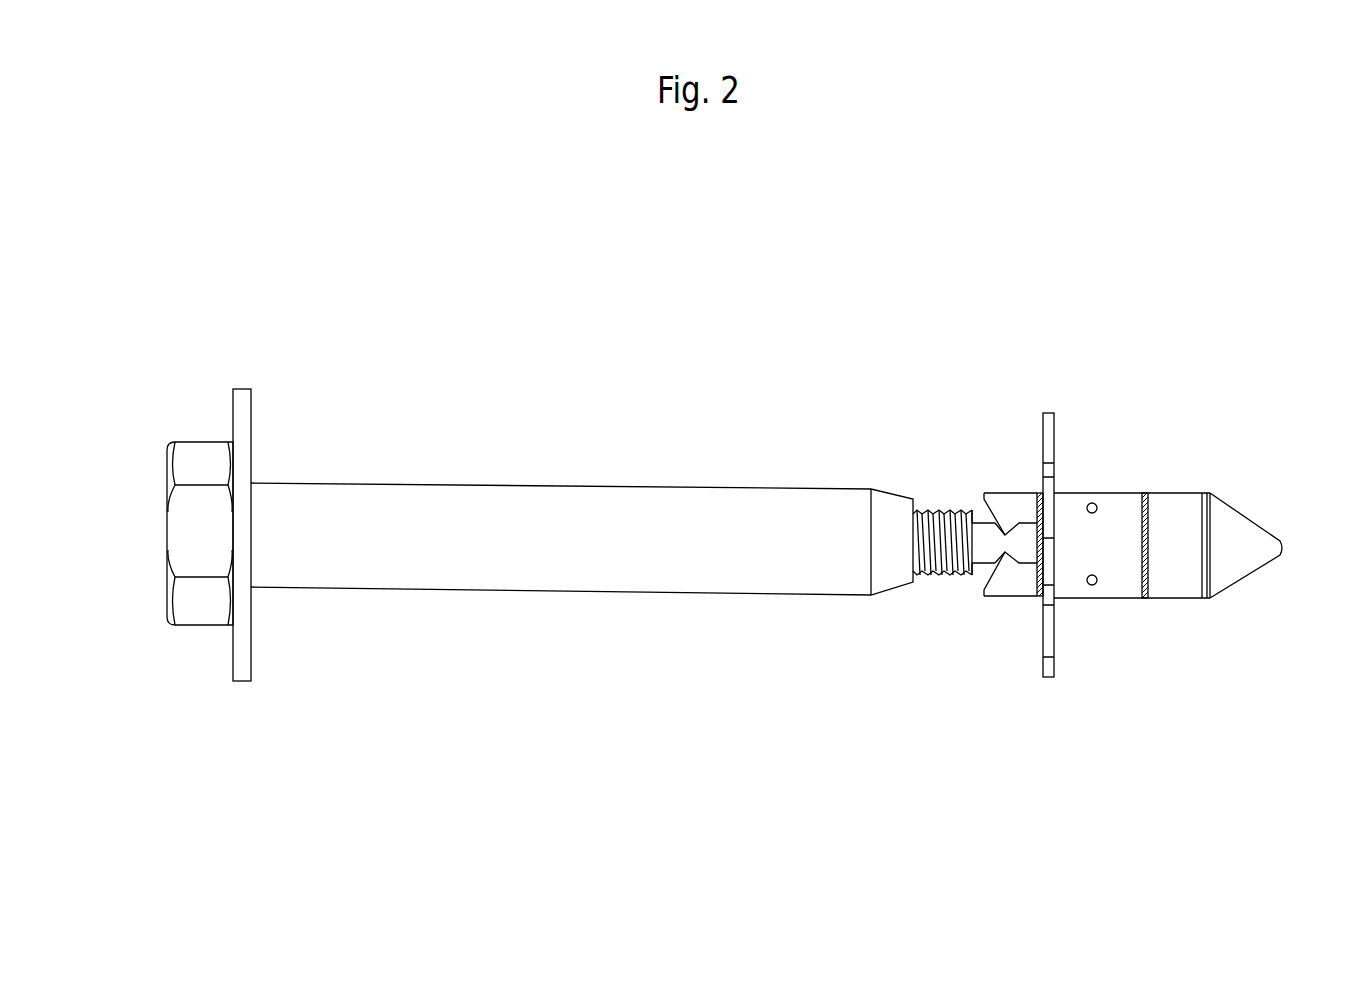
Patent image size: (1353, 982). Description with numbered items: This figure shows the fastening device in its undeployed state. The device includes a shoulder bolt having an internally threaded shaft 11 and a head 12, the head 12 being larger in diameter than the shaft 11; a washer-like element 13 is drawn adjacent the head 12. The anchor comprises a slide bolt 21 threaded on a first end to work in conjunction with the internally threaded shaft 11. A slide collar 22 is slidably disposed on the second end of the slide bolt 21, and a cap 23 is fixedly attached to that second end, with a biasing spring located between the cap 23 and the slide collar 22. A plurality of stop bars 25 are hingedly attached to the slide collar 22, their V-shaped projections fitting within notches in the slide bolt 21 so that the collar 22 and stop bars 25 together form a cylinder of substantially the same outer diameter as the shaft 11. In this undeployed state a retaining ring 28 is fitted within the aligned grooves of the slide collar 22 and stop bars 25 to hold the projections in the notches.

The internally threaded shaft 11 is at (665, 555).
The head 12 is at (184, 527).
The washer 13 is at (240, 662).
The slide bolt 21 is at (983, 538).
The slide collar 22 is at (1120, 567).
The cap 23 is at (1243, 537).
The stop bars 25 is at (1005, 583).
The retaining ring 28 is at (1048, 437).